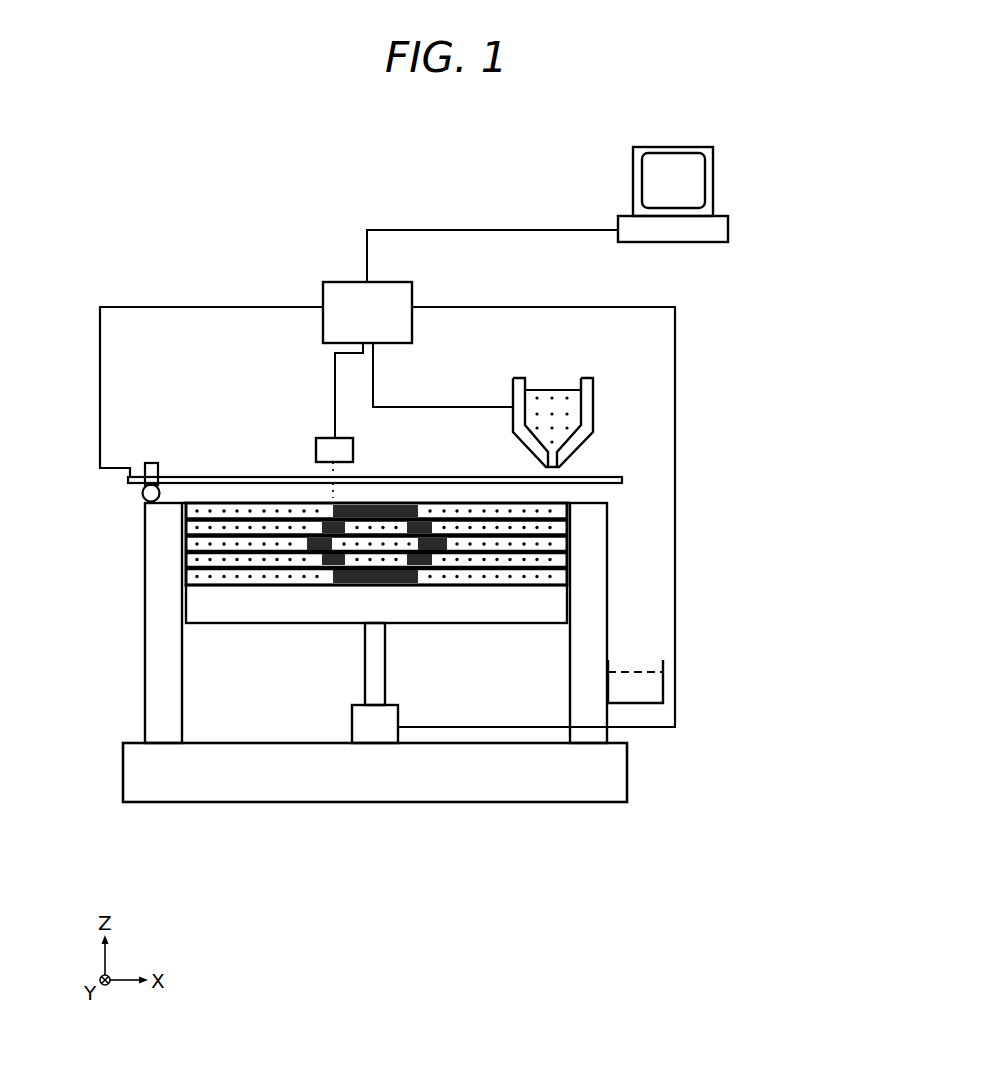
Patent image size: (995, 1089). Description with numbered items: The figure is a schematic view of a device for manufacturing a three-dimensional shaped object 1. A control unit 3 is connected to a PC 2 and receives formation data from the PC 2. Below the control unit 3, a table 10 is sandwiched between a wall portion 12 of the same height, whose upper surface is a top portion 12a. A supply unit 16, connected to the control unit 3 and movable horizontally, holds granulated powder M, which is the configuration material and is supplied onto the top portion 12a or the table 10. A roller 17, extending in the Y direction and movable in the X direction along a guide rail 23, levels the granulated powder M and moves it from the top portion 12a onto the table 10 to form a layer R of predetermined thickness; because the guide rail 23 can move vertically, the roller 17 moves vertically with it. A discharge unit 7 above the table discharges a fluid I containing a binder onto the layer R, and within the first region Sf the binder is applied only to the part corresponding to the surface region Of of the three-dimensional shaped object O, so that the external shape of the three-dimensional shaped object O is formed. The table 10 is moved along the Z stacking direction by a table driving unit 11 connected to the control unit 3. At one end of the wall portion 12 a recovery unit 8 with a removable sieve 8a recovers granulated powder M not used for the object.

The device for manufacturing a three-dimensional shaped object 1 is at (747, 334).
The PC 2 is at (745, 152).
The control unit 3 is at (340, 282).
The discharge unit 7 is at (316, 437).
The fluid I is at (333, 496).
The first region Sf is at (384, 489).
The supply unit 16 is at (580, 389).
The granulated powder M is at (546, 390).
The guide rail 23 is at (600, 477).
The roller 17 is at (140, 490).
The wall portion 12 is at (145, 590).
The top portion 12a is at (177, 502).
The layer R is at (415, 592).
The three-dimensional shaped object O is at (400, 594).
The surface region Of is at (407, 585).
The table 10 is at (263, 612).
The table driving unit 11 is at (352, 720).
The recovery unit 8 is at (677, 667).
The sieve 8a is at (637, 672).